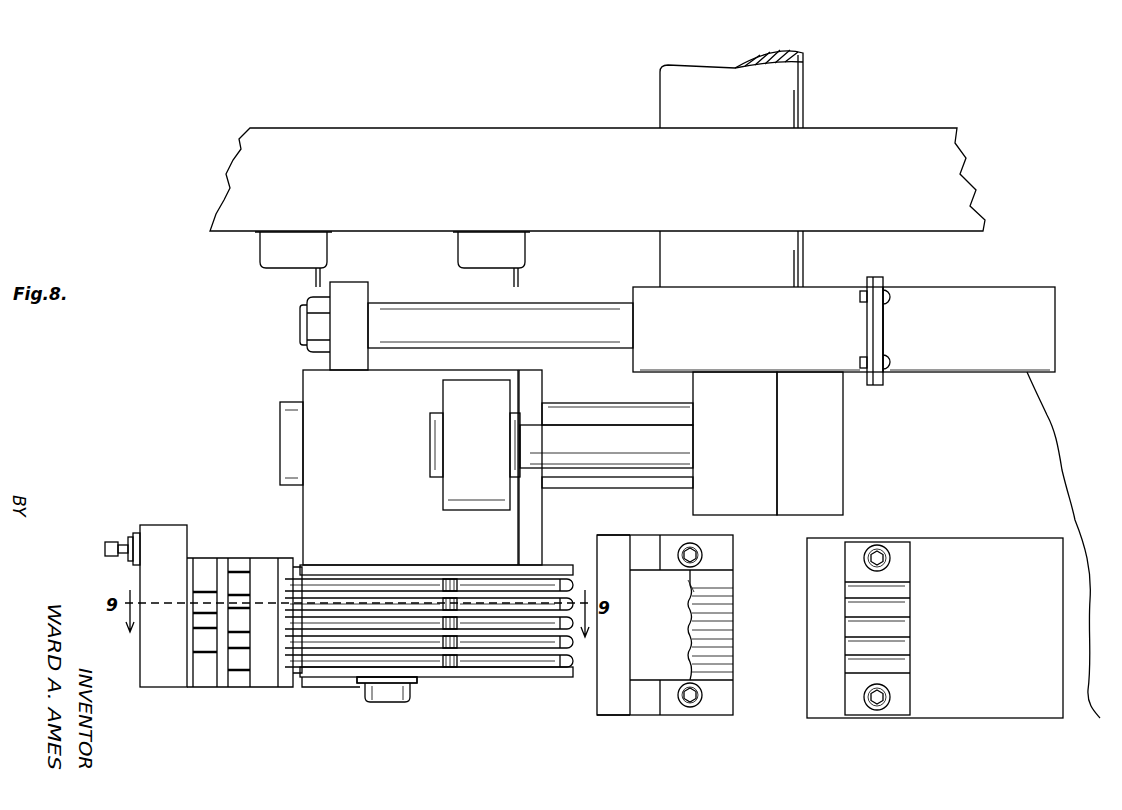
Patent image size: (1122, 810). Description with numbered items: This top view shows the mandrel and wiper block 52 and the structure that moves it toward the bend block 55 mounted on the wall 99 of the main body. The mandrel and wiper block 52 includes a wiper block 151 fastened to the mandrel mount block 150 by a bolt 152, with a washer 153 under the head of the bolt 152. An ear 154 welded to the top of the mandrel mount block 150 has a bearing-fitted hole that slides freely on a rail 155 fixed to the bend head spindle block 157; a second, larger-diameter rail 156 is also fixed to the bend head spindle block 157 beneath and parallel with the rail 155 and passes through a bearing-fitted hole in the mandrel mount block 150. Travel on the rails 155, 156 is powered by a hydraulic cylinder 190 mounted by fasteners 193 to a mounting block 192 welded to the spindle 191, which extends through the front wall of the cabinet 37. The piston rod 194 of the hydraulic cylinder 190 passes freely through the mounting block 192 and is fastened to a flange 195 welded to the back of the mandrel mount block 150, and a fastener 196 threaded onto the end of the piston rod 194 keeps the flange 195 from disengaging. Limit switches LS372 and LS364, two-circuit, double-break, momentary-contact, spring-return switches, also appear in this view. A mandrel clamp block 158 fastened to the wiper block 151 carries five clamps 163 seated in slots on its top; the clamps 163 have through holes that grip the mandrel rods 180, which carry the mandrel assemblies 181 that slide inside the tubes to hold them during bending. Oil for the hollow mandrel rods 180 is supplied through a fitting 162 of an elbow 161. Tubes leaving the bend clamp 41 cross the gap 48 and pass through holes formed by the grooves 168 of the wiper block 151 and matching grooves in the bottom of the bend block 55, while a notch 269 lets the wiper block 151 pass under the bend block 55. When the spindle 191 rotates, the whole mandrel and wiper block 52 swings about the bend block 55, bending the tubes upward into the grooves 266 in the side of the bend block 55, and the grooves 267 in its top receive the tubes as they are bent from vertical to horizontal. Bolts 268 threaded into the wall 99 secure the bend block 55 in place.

The cabinet 37 is at (915, 140).
The spindle 191 is at (803, 90).
The limit switch LS372 is at (293, 259).
The limit switch LS364 is at (491, 259).
The flange 195 is at (362, 292).
The piston rod 194 is at (457, 312).
The fastener 196 is at (300, 350).
The mounting block 192 is at (817, 292).
The hydraulic cylinder 190 is at (1000, 300).
The fasteners 193 is at (890, 298).
The bend head spindle block 157 is at (835, 430).
The mandrel mount block 150 is at (320, 391).
The ear 154 is at (450, 399).
The rail 155 is at (636, 455).
The second rail 156 is at (683, 478).
The elbow 161 is at (145, 530).
The fitting 162 is at (115, 545).
The mandrel and wiper block 52 is at (218, 604).
The mandrel clamp block 158 is at (225, 565).
The clamps 163 is at (240, 665).
The mandrel assemblies 181 is at (463, 565).
The mandrel rods 180 is at (429, 650).
The grooves 168 is at (348, 667).
The wiper block 151 is at (332, 677).
The bolt 152 is at (387, 702).
The washer 153 is at (413, 682).
The wall 99 is at (642, 708).
The bend block 55 is at (710, 623).
The grooves 267 is at (728, 628).
The grooves 266 is at (693, 595).
The bolts 268 is at (695, 530).
The notch 269 is at (632, 585).
The gap 48 is at (800, 700).
The bend clamp 41 is at (973, 507).